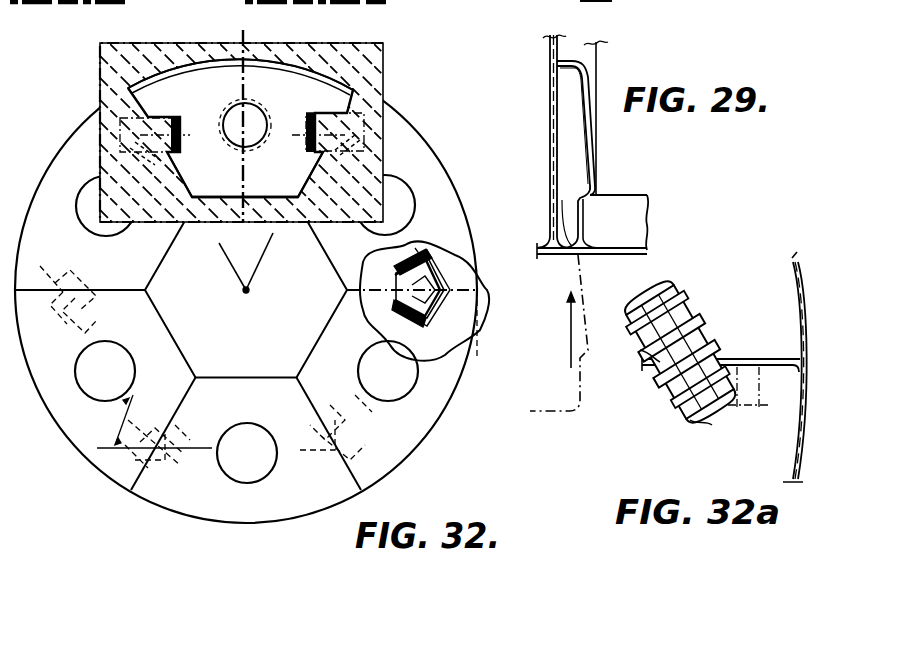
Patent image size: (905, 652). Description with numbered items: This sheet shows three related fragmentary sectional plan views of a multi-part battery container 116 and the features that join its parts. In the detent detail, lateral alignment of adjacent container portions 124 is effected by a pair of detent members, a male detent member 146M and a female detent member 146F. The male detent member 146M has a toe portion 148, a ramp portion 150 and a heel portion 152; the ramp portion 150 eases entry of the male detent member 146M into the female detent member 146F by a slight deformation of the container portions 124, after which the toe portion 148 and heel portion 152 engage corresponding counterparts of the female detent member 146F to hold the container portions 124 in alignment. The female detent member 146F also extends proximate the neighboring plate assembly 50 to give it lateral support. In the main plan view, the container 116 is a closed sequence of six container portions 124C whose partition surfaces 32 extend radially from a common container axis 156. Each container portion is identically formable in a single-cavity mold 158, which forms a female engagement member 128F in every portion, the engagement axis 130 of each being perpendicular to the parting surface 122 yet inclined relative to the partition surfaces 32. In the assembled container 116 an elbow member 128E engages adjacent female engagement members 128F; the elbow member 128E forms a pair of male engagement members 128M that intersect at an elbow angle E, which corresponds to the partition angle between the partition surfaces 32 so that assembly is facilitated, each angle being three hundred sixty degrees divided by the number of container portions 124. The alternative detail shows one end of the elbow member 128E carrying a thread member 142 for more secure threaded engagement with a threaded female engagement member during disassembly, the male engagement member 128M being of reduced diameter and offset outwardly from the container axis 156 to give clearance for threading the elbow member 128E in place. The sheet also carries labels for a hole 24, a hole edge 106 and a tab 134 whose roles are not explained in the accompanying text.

In FIG. 32, the outer ring 116 is at (284, 520).
In FIG. 32, the cover plate 124C is at (316, 335).
In FIG. 29, the wall 124 is at (548, 256).
In FIG. 32a, the wall 124 is at (792, 268).
In FIG. 32, the hole 130 is at (135, 398).
In FIG. 32, the hole 24 is at (388, 371).
In FIG. 32, the hole edge 106 is at (397, 396).
In FIG. 32, the bracket (end) 128E is at (40, 266).
In FIG. 32a, the bracket (end) 128E is at (742, 358).
In FIG. 32, the bracket (front) 128F is at (150, 119).
In FIG. 32a, the bracket (front) 128F is at (692, 424).
In FIG. 32a, the bracket (middle) 128M is at (712, 400).
In FIG. 32, the hatched section 158 is at (100, 93).
In FIG. 32, the center hole 122 is at (243, 232).
In FIG. 32, the wall 32 is at (186, 198).
In FIG. 32, the radial line 156 is at (252, 285).
In FIG. 32, the dimension E is at (154, 421).
In FIG. 29, the wall 148 is at (550, 91).
In FIG. 29, the flange 146F is at (590, 138).
In FIG. 29, the member 146M is at (557, 120).
In FIG. 29, the line 150 is at (584, 148).
In FIG. 29, the fillet 152 is at (566, 187).
In FIG. 29, the block 50 is at (624, 222).
In FIG. 32a, the cylinder assembly 142 is at (702, 291).
In FIG. 32a, the tab 134 is at (662, 380).